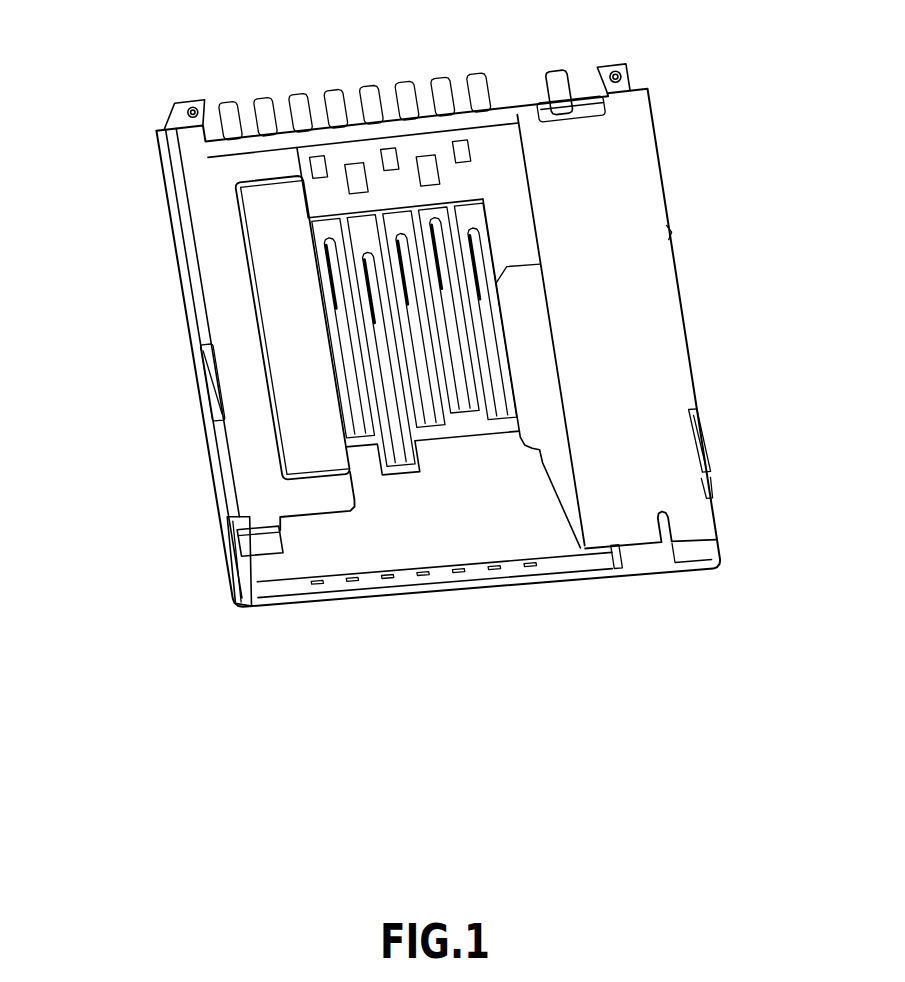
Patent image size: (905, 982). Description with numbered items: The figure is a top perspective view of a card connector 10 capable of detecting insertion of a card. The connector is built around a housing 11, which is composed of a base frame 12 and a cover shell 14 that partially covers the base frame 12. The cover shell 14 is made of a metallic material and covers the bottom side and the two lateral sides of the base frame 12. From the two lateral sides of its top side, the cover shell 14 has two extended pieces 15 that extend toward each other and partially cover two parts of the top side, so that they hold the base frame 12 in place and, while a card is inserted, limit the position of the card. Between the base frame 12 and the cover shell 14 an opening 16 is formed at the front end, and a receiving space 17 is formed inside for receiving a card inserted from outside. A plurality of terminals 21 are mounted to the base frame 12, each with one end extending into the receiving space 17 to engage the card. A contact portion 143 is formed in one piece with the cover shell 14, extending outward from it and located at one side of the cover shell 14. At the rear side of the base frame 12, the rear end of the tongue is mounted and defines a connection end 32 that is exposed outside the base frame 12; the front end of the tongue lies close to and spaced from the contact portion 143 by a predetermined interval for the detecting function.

The card connector 10 is at (198, 594).
The housing 11 is at (215, 506).
The base frame 12 is at (268, 600).
The cover shell 14 is at (207, 465).
The extended pieces 15 is at (617, 223).
The opening 16 is at (386, 604).
The receiving space 17 is at (314, 523).
The terminals 21 is at (437, 216).
The connection end 32 is at (557, 77).
The contact portion 143 is at (690, 343).